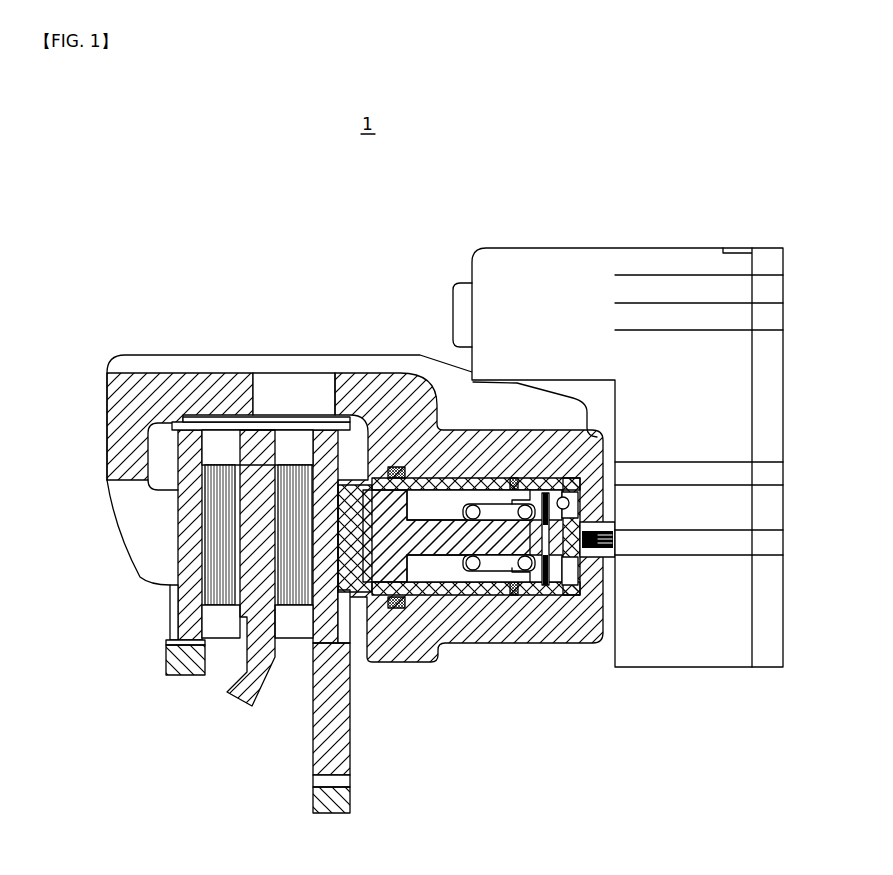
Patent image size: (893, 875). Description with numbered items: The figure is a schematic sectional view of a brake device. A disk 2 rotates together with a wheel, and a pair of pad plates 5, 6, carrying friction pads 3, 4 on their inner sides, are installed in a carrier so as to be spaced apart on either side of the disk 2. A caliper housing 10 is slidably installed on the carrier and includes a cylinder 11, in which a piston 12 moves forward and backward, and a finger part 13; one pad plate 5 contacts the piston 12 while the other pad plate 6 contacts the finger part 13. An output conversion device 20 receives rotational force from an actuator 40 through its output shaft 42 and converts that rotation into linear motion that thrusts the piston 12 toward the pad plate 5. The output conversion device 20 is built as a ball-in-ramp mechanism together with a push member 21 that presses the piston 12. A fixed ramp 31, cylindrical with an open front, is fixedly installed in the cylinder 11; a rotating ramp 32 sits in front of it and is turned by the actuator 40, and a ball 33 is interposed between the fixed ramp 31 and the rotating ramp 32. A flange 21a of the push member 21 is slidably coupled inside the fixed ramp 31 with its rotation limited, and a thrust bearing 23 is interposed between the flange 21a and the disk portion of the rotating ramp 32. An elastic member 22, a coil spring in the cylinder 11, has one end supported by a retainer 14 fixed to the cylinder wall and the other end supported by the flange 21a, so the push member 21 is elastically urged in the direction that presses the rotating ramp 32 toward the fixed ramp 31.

The disk 2 is at (270, 615).
The friction pad 3 is at (294, 600).
The friction pad 4 is at (228, 600).
The pad plate 5 is at (336, 612).
The pad plate 6 is at (180, 614).
The caliper housing 10 is at (333, 479).
The cylinder 11 is at (418, 598).
The piston 12 is at (394, 602).
The finger part 13 is at (122, 431).
The retainer 14 is at (479, 492).
The output conversion device 20 is at (499, 585).
The push member 21 is at (440, 560).
The flange 21a is at (497, 596).
The elastic member 22 is at (469, 575).
The thrust bearing 23 is at (545, 590).
The fixed ramp 31 is at (577, 596).
The rotating ramp 32 is at (547, 492).
The ball 33 is at (571, 504).
The actuator 40 is at (688, 246).
The output shaft 42 is at (616, 542).